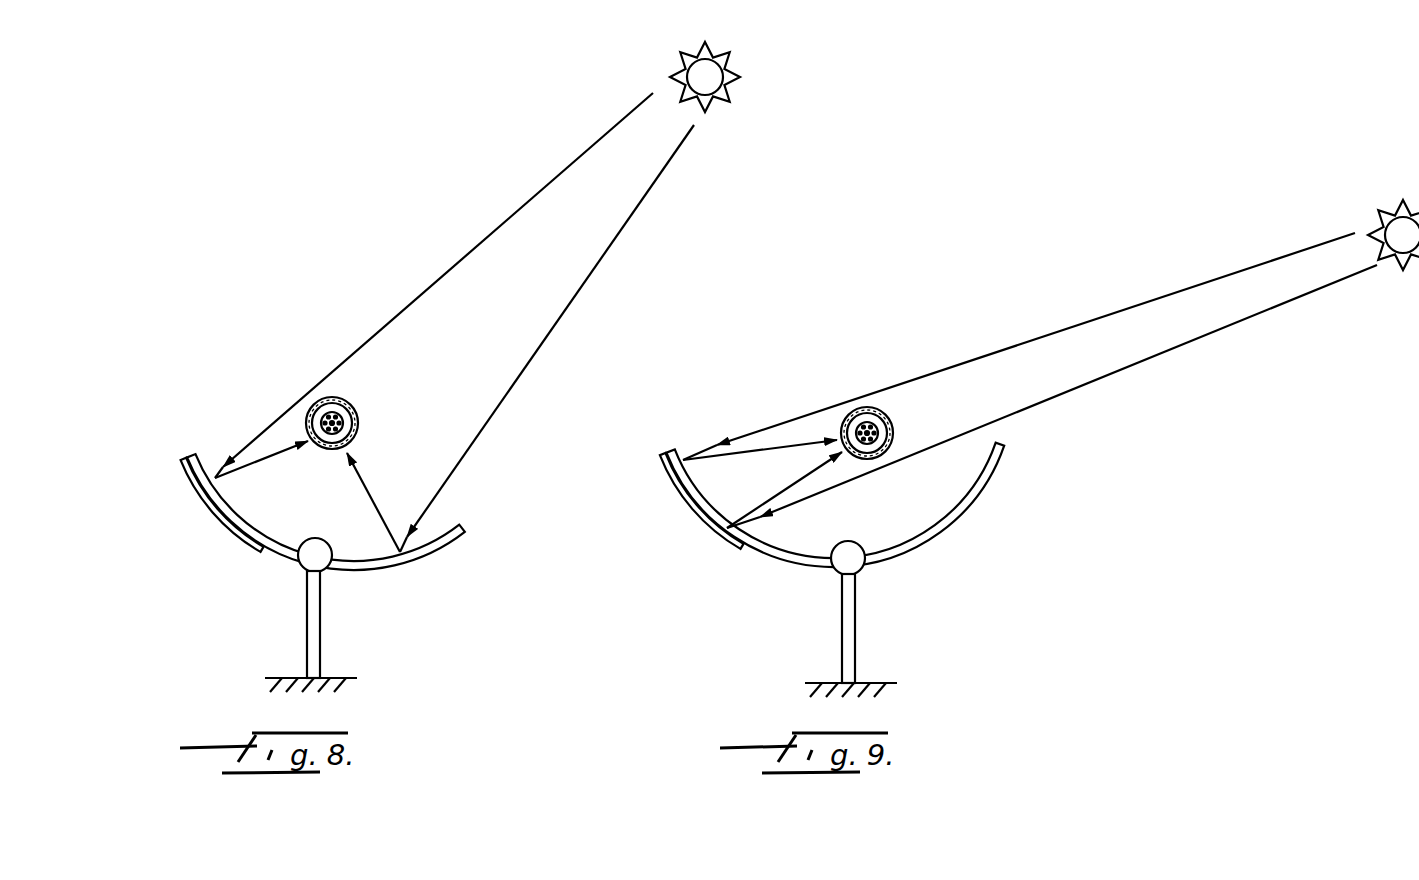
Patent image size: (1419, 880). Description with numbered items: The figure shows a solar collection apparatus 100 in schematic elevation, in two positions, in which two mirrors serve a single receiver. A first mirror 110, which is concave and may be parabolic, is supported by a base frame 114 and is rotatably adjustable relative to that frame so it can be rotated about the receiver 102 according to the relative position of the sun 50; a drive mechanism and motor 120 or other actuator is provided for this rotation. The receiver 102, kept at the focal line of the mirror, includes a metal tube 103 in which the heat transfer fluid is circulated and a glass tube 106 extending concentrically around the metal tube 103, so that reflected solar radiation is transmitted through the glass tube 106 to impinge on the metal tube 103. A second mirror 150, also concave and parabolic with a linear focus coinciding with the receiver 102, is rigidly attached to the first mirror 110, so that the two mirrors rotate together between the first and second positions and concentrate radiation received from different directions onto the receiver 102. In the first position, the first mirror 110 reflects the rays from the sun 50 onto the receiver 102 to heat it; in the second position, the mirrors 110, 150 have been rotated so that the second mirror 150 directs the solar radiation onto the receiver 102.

In FIG. 8, the sun 50 is at (688, 74).
In FIG. 9, the sun 50 is at (1393, 203).
In FIG. 8, the apparatus 100 is at (283, 325).
In FIG. 9, the apparatus 100 is at (887, 366).
In FIG. 8, the receiver 102 is at (394, 400).
In FIG. 9, the receiver 102 is at (867, 388).
In FIG. 8, the metal tube 103 is at (358, 425).
In FIG. 9, the metal tube 103 is at (856, 417).
In FIG. 8, the glass tube 106 is at (356, 401).
In FIG. 9, the glass tube 106 is at (889, 408).
In FIG. 8, the first mirror 110 is at (396, 572).
In FIG. 9, the first mirror 110 is at (961, 522).
In FIG. 8, the base frame 114 is at (310, 625).
In FIG. 9, the base frame 114 is at (852, 638).
In FIG. 8, the drive mechanism and motor 120 is at (305, 560).
In FIG. 9, the drive mechanism and motor 120 is at (843, 567).
In FIG. 8, the second mirror 150 is at (202, 515).
In FIG. 9, the second mirror 150 is at (677, 507).